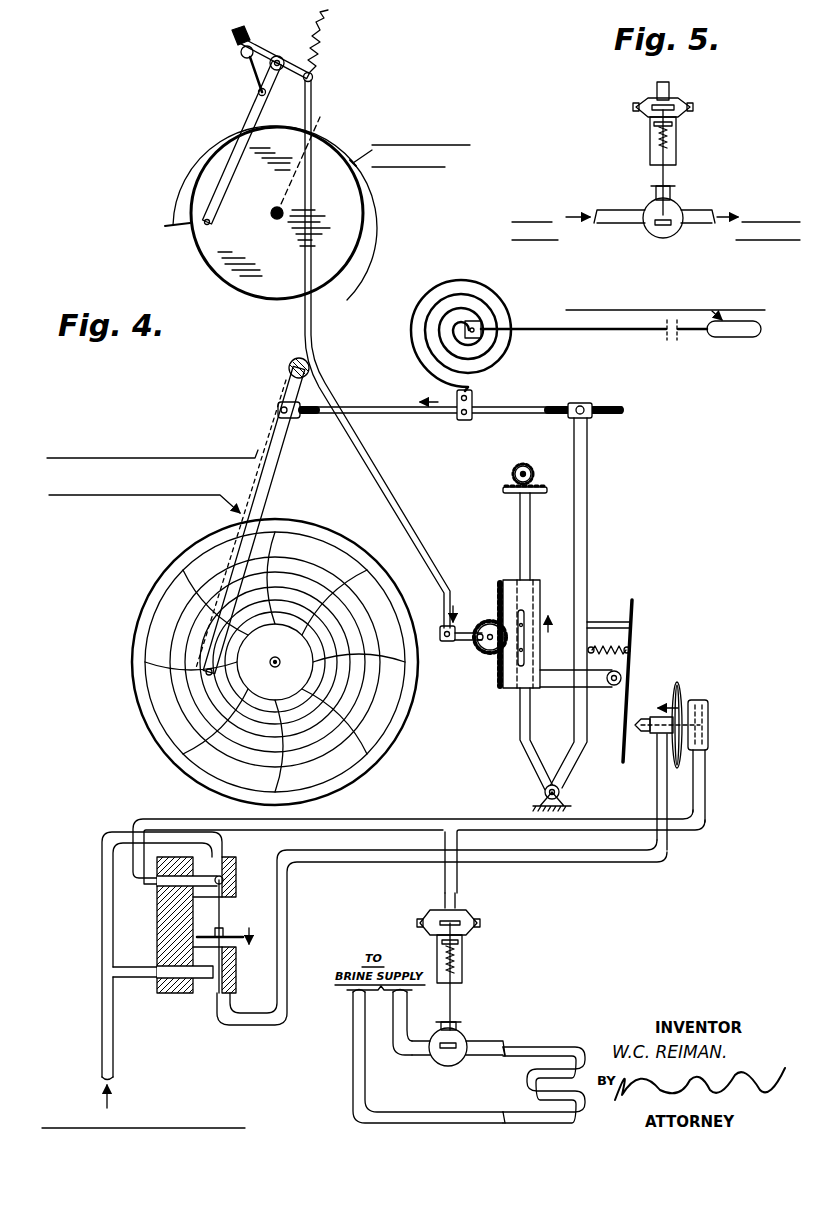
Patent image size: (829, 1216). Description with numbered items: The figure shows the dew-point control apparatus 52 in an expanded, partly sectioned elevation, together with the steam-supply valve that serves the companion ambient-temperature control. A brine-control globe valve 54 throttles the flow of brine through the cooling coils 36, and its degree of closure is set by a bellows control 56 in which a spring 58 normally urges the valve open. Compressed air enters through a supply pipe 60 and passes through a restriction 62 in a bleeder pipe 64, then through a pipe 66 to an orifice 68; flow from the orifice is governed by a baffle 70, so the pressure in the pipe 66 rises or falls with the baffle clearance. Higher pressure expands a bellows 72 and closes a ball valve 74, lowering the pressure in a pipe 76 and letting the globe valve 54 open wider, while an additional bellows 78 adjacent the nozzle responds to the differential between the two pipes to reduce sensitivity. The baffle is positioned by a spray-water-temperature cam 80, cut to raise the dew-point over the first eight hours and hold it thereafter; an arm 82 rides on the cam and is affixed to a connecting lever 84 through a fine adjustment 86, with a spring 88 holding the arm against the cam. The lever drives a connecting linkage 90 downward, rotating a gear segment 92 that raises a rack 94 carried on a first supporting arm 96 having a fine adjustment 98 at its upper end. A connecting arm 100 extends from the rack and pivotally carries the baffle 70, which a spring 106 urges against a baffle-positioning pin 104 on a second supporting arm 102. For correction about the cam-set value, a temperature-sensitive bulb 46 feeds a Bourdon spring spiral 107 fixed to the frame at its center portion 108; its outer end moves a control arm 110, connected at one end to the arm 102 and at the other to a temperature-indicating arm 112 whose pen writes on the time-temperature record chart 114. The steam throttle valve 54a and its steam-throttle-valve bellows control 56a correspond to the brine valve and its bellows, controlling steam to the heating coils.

In FIG. 4, the cooling coils 36 is at (557, 1047).
In FIG. 4, the temperature-sensitive bulb 46 is at (721, 337).
In FIG. 4, the dew-point control apparatus 52 is at (598, 562).
In FIG. 4, the brine-control globe valve 54 is at (464, 1034).
In FIG. 5, the steam throttle valve 54a is at (678, 204).
In FIG. 4, the bellows control 56 is at (473, 918).
In FIG. 5, the steam-throttle-valve bellows control 56a is at (689, 110).
In FIG. 4, the spring 58 is at (463, 960).
In FIG. 4, the supply pipe 60 is at (100, 1003).
In FIG. 4, the restriction 62 is at (205, 995).
In FIG. 4, the bleeder pipe 64 is at (140, 979).
In FIG. 4, the pipe 66 is at (347, 855).
In FIG. 4, the orifice 68 is at (640, 740).
In FIG. 4, the baffle 70 is at (638, 604).
In FIG. 4, the bellows 72 is at (228, 935).
In FIG. 4, the ball valve 74 is at (225, 885).
In FIG. 4, the pipe 76 is at (428, 819).
In FIG. 4, the additional bellows 78 is at (680, 690).
In FIG. 4, the spray-water-temperature cam 80 is at (338, 140).
In FIG. 4, the arm 82 is at (226, 188).
In FIG. 4, the connecting lever 84 is at (264, 46).
In FIG. 4, the fine adjustment 86 is at (256, 70).
In FIG. 4, the spring 88 is at (321, 54).
In FIG. 4, the connecting linkage 90 is at (313, 92).
In FIG. 4, the gear segment 92 is at (485, 620).
In FIG. 4, the rack 94 is at (533, 586).
In FIG. 4, the first supporting arm 96 is at (531, 528).
In FIG. 4, the fine adjustment 98 is at (513, 478).
In FIG. 4, the connecting arm 100 is at (599, 690).
In FIG. 4, the second supporting arm 102 is at (588, 497).
In FIG. 4, the baffle-positioning pin 104 is at (612, 622).
In FIG. 4, the spring 106 is at (610, 648).
In FIG. 4, the Bourdon spring spiral 107 is at (496, 284).
In FIG. 4, the center portion 108 is at (481, 322).
In FIG. 4, the control arm 110 is at (500, 407).
In FIG. 4, the temperature-indicating arm 112 is at (275, 480).
In FIG. 4, the time-temperature record chart 114 is at (170, 588).